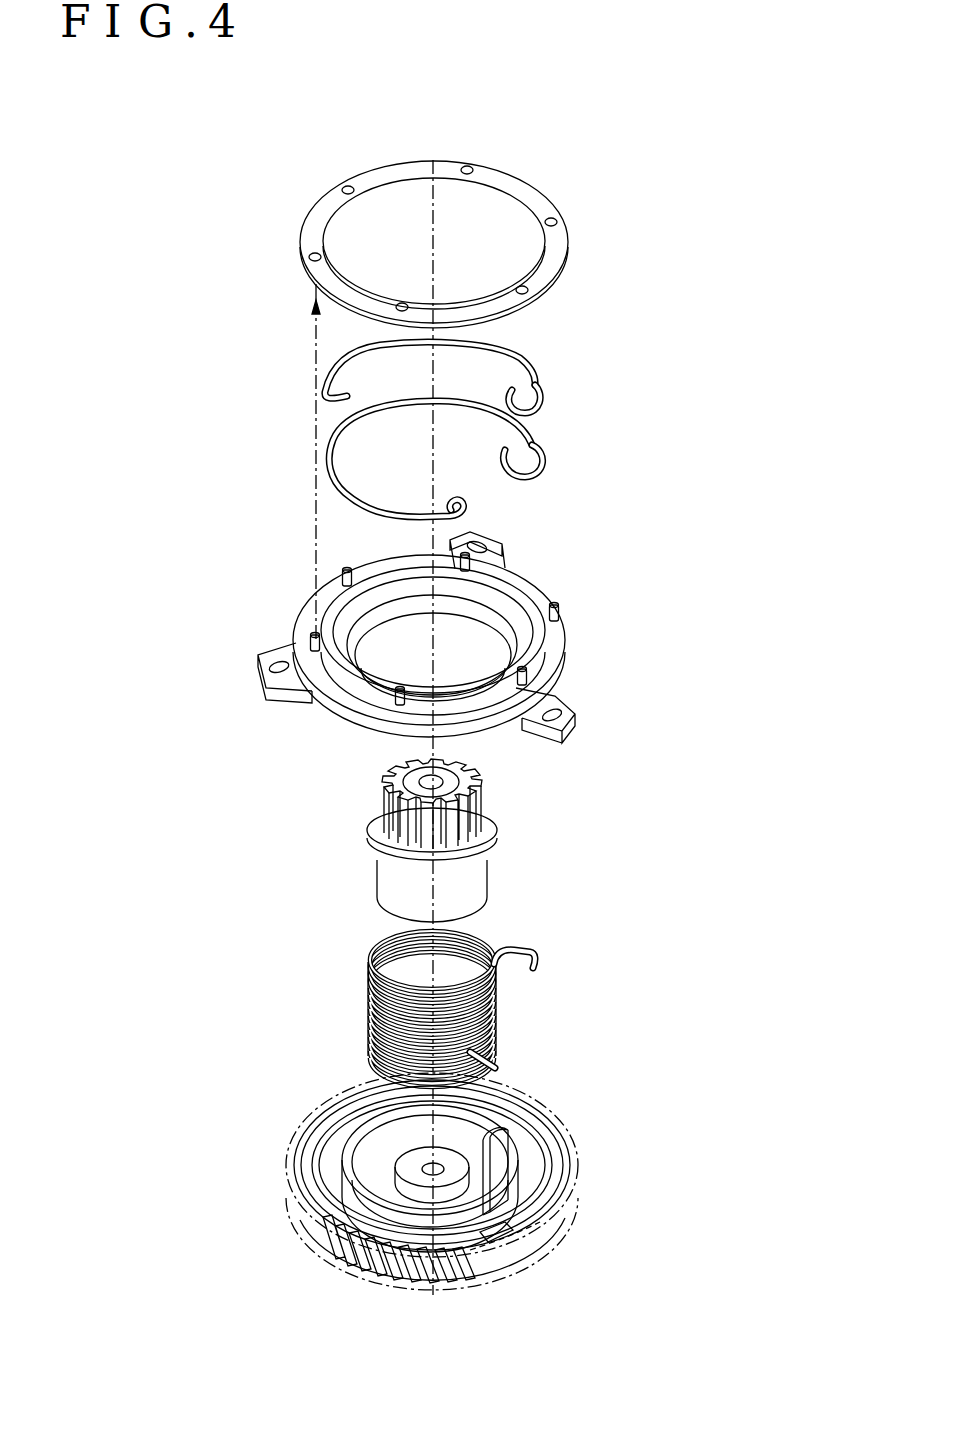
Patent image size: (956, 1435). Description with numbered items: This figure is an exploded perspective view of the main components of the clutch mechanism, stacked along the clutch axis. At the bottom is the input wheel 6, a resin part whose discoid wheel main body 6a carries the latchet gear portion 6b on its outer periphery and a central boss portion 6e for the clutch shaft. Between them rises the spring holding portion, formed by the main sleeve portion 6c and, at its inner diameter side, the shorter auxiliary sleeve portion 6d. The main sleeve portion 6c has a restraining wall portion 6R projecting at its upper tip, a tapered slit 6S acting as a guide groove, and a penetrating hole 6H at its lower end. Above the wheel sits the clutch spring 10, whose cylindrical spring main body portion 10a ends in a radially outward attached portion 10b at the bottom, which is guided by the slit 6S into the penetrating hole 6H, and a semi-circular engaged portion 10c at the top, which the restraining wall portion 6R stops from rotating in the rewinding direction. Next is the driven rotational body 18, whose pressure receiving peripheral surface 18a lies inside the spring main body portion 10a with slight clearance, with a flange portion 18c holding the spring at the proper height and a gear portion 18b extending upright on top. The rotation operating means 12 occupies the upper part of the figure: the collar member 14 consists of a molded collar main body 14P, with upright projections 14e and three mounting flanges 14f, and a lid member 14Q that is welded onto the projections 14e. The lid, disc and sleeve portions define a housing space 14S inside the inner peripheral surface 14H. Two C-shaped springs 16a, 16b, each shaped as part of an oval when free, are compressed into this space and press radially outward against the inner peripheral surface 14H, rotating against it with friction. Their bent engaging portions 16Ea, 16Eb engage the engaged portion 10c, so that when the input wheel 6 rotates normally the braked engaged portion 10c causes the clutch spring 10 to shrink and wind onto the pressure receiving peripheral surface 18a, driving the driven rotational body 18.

The input wheel 6 is at (420, 1181).
The wheel main body 6a is at (300, 1192).
The latchet gear portion 6b is at (348, 1256).
The main sleeve portion 6c is at (360, 1130).
The auxiliary sleeve portion 6d is at (402, 1165).
The boss portion 6e is at (438, 1165).
The restraining wall portion 6R is at (522, 1108).
The slit 6S is at (522, 1240).
The penetrating hole 6H is at (470, 1250).
The clutch spring 10 is at (457, 1009).
The spring main body portion 10a is at (497, 1008).
The attached portion 10b is at (498, 1060).
The engaged portion 10c is at (540, 960).
The rotation operating means 12 is at (180, 437).
The collar member 14 is at (420, 632).
The projections 14e is at (567, 668).
The mounting flanges 14f is at (498, 542).
The inner peripheral surface 14H is at (523, 585).
The collar main body 14P is at (338, 718).
The lid member 14Q is at (308, 232).
The housing space 14S is at (402, 592).
The C-shaped spring 16a is at (378, 430).
The C-shaped spring 16b is at (393, 352).
The engaging portion 16Ea is at (540, 441).
The engaging portion 16Eb is at (540, 378).
The driven rotational body 18 is at (448, 840).
The pressure receiving peripheral surface 18a is at (386, 900).
The gear portion 18b is at (490, 794).
The flange portion 18c is at (372, 826).